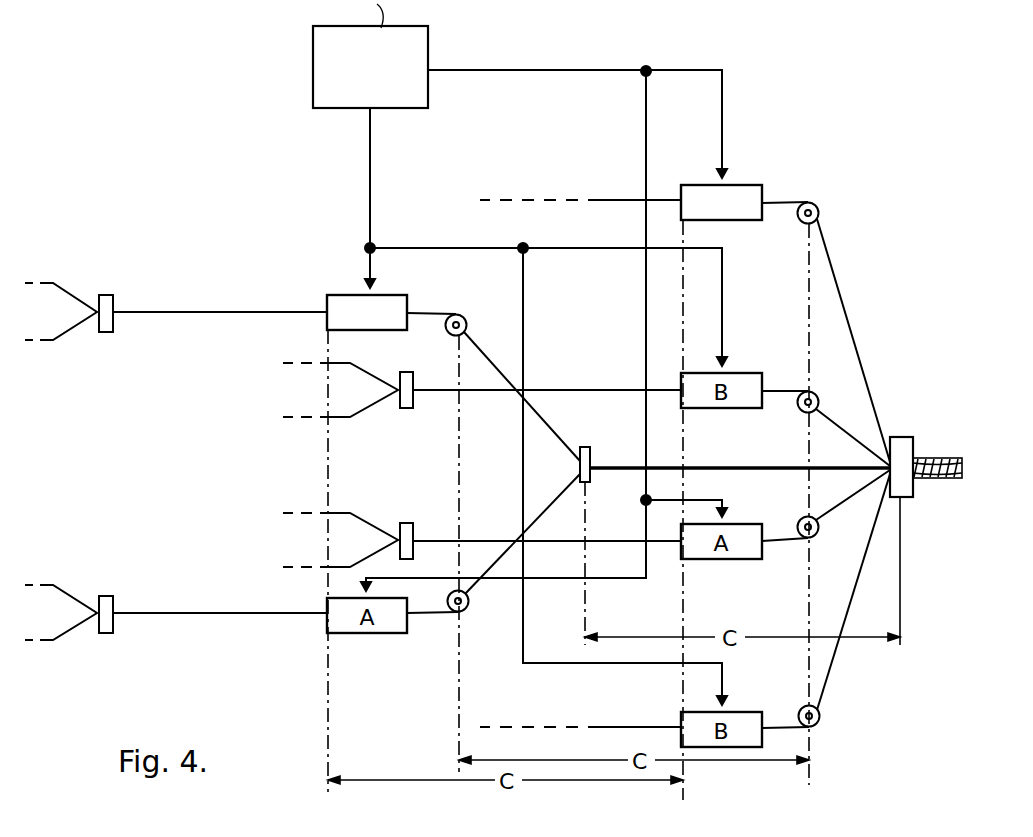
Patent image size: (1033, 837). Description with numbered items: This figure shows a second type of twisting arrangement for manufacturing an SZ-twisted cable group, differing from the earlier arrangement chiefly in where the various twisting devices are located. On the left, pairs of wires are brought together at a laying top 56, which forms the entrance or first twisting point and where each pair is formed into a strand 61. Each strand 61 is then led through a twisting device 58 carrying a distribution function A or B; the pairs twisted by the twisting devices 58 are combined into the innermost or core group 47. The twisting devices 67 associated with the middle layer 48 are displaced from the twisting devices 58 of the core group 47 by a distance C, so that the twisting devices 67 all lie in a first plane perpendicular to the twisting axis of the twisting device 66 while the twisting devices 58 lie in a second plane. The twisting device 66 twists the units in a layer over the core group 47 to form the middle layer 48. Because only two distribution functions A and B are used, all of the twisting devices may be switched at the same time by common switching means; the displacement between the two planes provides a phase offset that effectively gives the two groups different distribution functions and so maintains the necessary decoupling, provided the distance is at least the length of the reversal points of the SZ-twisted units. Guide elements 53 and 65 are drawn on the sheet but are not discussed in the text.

The thread guide fork 53 is at (66, 292).
The laying top 56 is at (114, 298).
The strand 61 is at (236, 307).
The twisting device 58 is at (444, 284).
The twisting device 67 is at (750, 188).
The thread guide 65 is at (589, 448).
The core group 47 is at (785, 466).
The twisting device 66 is at (905, 437).
The middle layer 48 is at (933, 481).